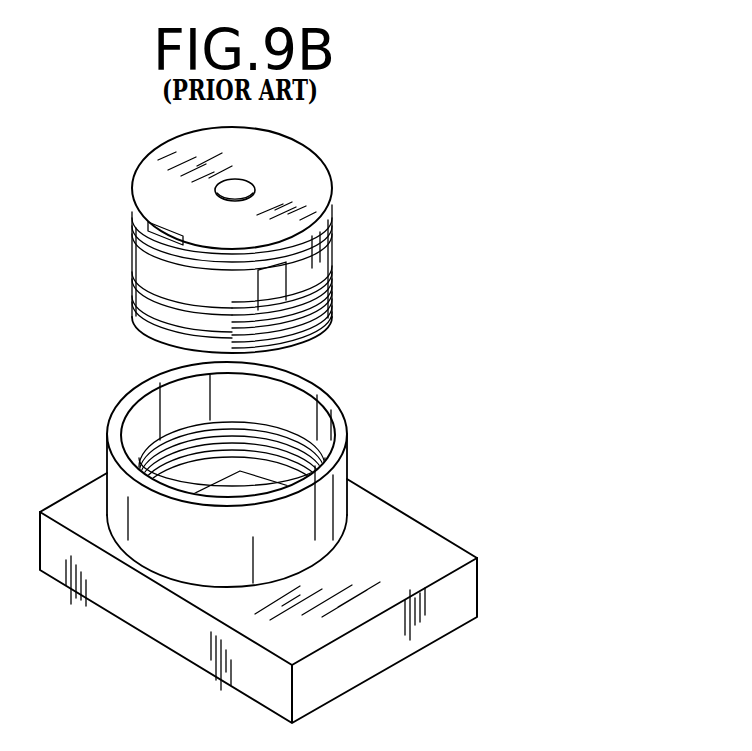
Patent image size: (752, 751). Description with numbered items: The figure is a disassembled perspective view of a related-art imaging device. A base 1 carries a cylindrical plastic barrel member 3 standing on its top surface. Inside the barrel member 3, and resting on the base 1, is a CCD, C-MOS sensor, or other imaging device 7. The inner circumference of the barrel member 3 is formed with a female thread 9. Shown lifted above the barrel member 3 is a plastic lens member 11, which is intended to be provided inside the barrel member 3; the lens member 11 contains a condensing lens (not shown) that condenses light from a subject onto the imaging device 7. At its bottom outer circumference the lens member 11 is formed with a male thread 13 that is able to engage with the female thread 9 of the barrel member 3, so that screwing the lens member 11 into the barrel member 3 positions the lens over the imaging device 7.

The base 1 is at (420, 540).
The barrel member 3 is at (343, 500).
The imaging device 7 is at (248, 483).
The female thread 9 is at (168, 435).
The lens member 11 is at (307, 187).
The male thread 13 is at (335, 288).